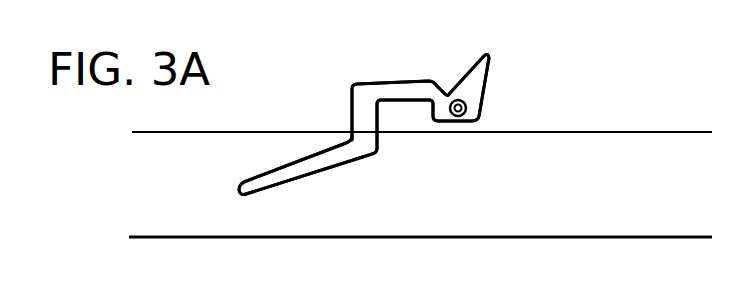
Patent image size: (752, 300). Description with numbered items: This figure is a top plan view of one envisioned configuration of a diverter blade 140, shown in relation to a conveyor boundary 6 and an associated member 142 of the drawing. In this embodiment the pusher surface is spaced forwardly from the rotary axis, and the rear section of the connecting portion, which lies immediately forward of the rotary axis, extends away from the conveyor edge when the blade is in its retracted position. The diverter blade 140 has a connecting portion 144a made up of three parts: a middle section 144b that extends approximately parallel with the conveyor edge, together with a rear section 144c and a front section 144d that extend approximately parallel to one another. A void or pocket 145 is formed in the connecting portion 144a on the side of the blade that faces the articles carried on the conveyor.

The stacker tray / support surface 6 is at (605, 160).
The diverter blade 140 is at (338, 87).
The latch arm 142 is at (313, 172).
The connecting portion 144a is at (386, 80).
The middle section 144b is at (430, 80).
The rear section 144c is at (433, 124).
The front section 144d is at (363, 120).
The void or pocket 145 is at (405, 150).